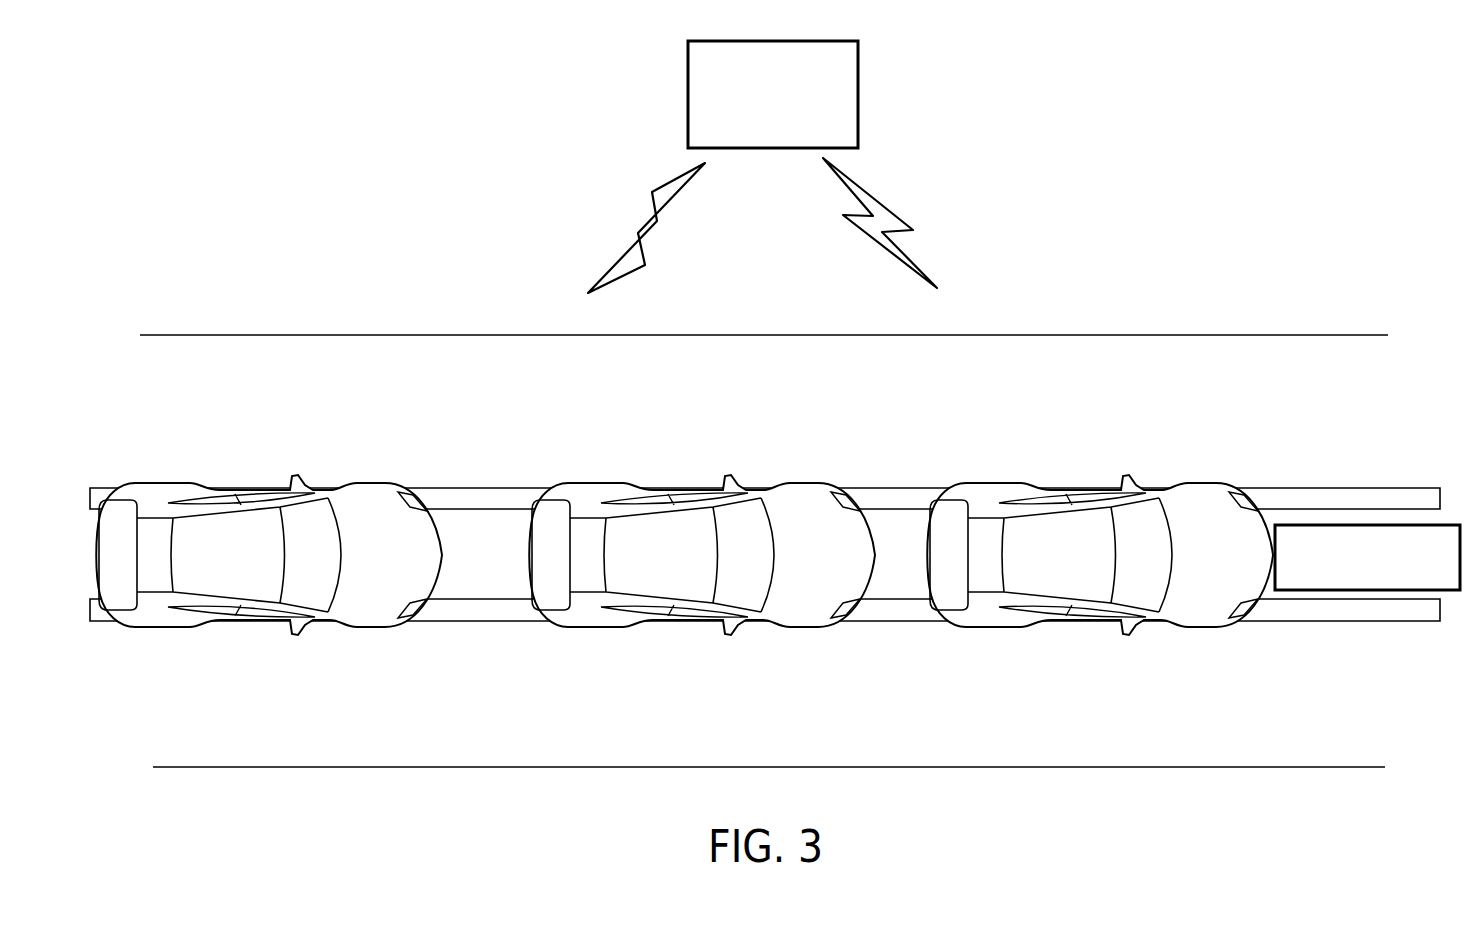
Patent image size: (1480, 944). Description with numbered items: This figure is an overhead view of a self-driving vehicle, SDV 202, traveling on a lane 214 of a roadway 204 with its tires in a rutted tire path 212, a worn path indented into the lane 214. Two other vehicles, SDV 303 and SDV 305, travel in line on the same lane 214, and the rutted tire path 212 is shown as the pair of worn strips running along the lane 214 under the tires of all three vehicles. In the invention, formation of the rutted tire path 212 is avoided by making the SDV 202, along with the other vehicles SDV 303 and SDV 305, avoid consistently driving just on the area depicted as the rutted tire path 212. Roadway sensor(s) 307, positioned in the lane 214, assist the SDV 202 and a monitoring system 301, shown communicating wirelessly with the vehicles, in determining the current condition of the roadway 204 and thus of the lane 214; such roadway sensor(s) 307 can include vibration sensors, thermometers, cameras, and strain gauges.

The roadway 204 is at (1192, 316).
The monitoring system 301 is at (688, 92).
The rutted tire path 212 is at (1360, 488).
The SDV 202 is at (269, 555).
The SDV 303 is at (702, 555).
The SDV 305 is at (1100, 555).
The roadway sensor(s) 307 is at (1392, 583).
The lane 214 is at (1182, 744).